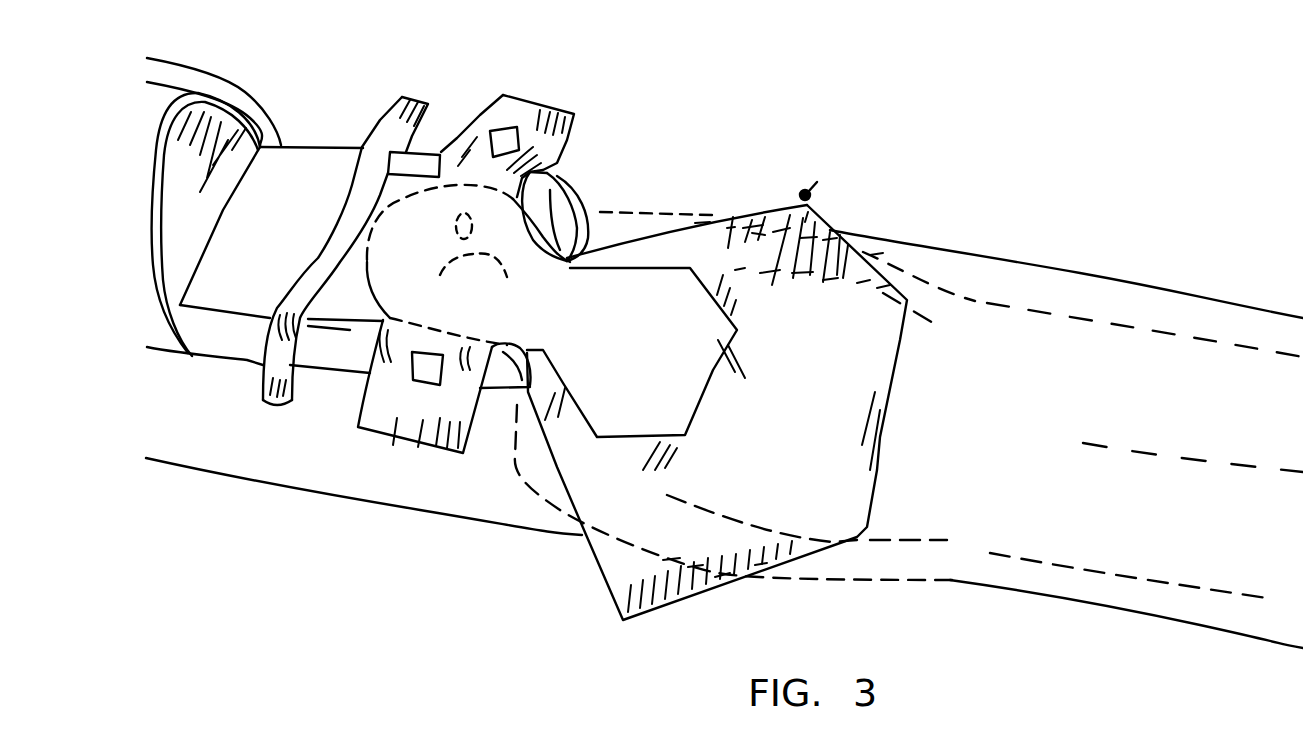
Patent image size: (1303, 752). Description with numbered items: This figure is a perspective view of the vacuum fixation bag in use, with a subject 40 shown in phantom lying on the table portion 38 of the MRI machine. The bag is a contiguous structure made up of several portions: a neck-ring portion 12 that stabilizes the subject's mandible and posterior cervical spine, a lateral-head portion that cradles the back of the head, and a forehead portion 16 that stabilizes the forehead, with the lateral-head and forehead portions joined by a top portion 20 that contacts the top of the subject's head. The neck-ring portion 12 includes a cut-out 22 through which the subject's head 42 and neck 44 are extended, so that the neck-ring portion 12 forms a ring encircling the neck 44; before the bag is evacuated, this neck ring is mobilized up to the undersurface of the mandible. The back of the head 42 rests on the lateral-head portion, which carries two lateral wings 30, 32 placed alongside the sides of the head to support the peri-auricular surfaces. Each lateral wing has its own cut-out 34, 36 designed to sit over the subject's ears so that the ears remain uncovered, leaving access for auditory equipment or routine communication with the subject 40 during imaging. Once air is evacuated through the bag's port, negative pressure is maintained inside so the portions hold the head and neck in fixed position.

The neck-ring portion 12 is at (833, 315).
The forehead portion 16 is at (370, 155).
The top portion 20 is at (400, 187).
The cut-out 22 is at (690, 268).
The lateral wing 30 is at (530, 113).
The lateral wing 32 is at (392, 430).
The cut-out 34 is at (503, 133).
The cut-out 36 is at (422, 370).
The table portion 38 is at (975, 267).
The subject 40 is at (1148, 406).
The head 42 is at (522, 227).
The neck 44 is at (567, 303).